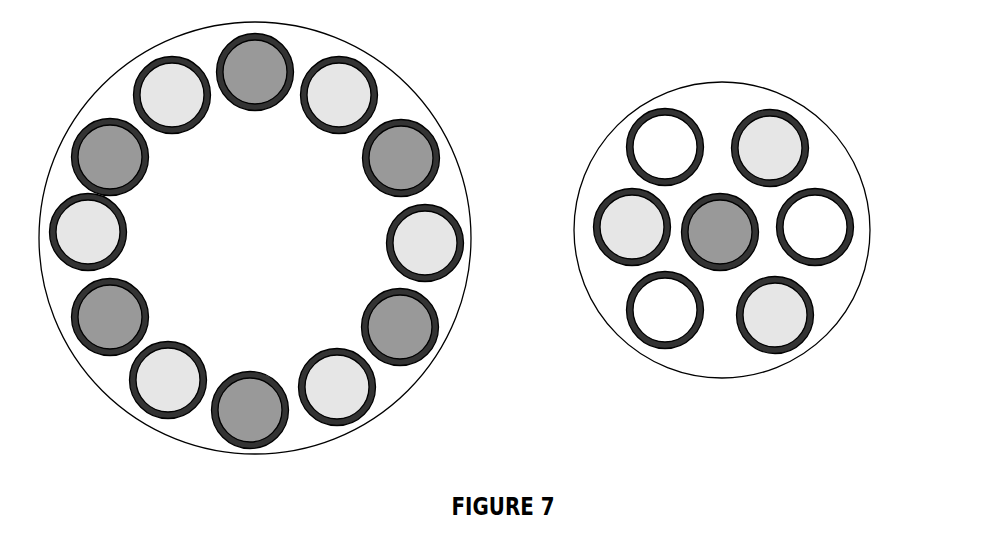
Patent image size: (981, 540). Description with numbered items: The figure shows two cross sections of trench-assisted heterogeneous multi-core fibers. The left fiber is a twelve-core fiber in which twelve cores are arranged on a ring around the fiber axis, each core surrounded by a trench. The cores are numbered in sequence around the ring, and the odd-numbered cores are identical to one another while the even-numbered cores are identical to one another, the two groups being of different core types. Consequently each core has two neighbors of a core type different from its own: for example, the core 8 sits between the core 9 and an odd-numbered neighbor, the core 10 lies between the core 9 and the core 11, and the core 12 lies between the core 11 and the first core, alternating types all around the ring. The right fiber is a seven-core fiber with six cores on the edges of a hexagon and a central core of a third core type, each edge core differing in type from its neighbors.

The core 8 is at (168, 380).
The core 9 is at (110, 317).
The core 10 is at (88, 232).
The core 11 is at (110, 157).
The core 12 is at (172, 95).